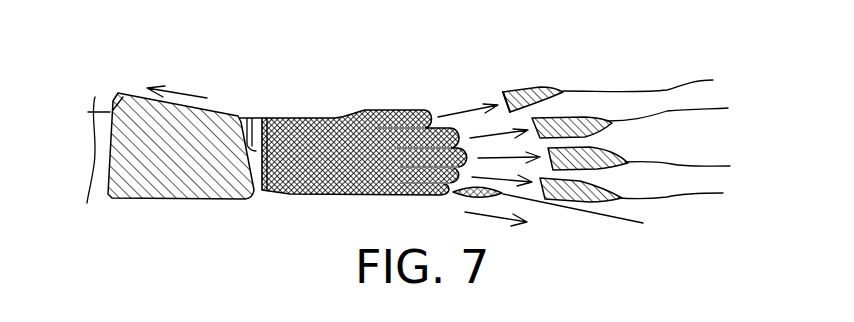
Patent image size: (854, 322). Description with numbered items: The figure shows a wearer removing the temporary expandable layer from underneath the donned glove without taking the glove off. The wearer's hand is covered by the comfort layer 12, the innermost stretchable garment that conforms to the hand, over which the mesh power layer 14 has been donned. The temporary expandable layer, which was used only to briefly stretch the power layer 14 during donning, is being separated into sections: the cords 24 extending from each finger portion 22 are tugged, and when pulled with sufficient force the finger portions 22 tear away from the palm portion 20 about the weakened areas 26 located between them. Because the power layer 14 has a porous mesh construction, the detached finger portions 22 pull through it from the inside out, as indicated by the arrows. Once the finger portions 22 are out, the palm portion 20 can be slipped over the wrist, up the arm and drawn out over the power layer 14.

The comfort layer 12 is at (248, 118).
The power layer 14 is at (313, 118).
The palm portion 20 is at (187, 203).
The finger portions 22 is at (528, 86).
The cords 24 is at (630, 90).
The weakened areas 26 is at (503, 93).